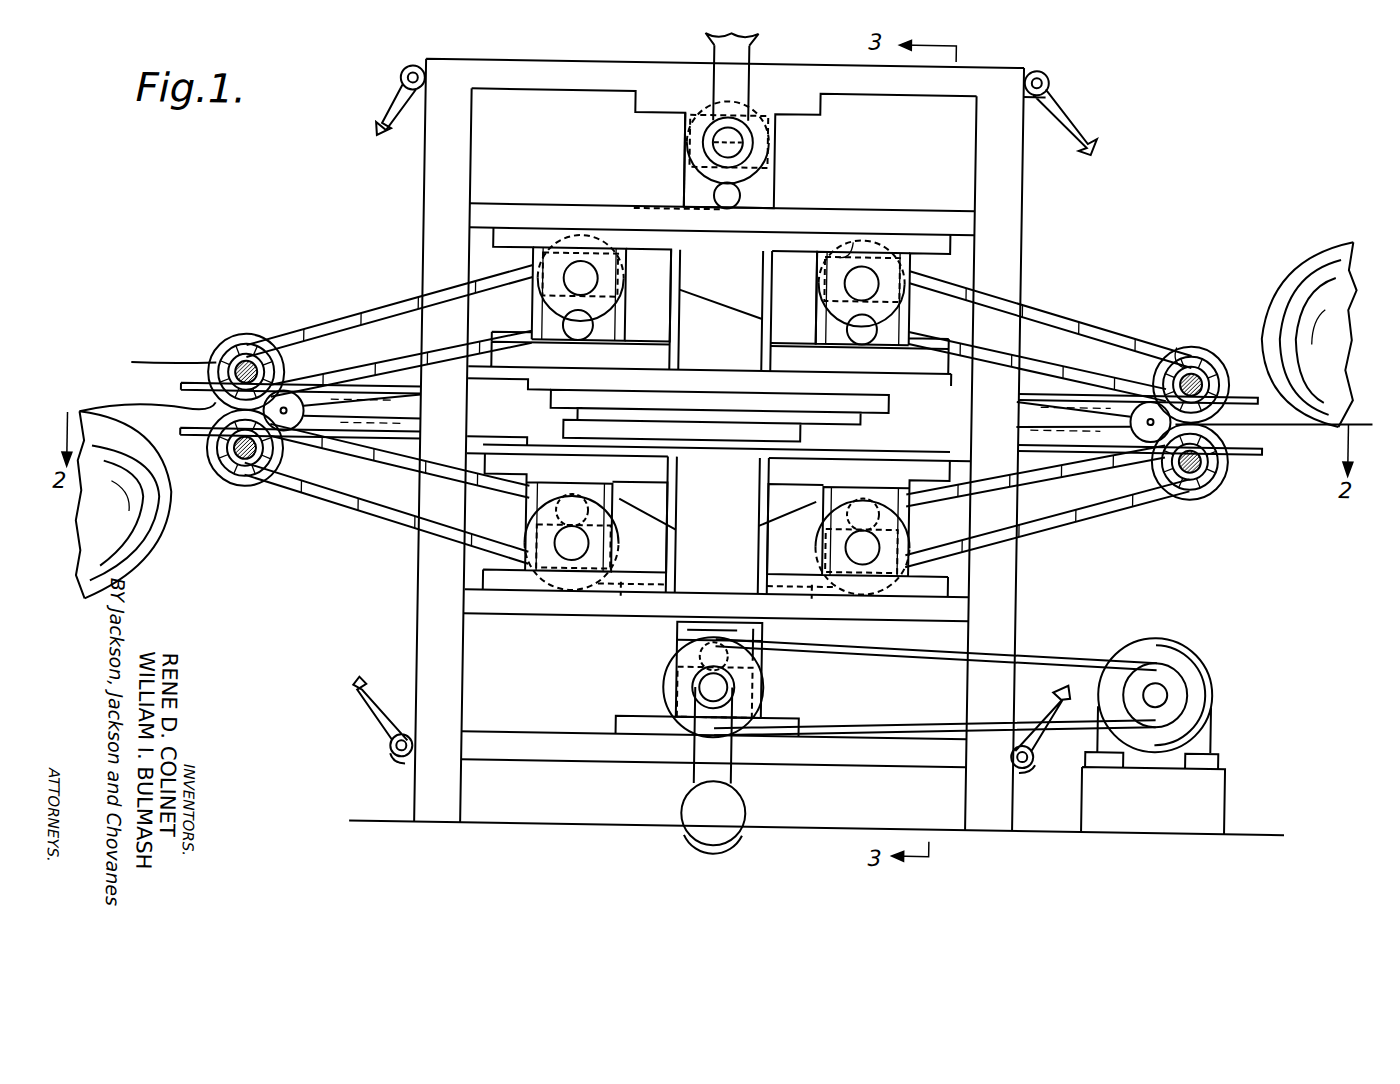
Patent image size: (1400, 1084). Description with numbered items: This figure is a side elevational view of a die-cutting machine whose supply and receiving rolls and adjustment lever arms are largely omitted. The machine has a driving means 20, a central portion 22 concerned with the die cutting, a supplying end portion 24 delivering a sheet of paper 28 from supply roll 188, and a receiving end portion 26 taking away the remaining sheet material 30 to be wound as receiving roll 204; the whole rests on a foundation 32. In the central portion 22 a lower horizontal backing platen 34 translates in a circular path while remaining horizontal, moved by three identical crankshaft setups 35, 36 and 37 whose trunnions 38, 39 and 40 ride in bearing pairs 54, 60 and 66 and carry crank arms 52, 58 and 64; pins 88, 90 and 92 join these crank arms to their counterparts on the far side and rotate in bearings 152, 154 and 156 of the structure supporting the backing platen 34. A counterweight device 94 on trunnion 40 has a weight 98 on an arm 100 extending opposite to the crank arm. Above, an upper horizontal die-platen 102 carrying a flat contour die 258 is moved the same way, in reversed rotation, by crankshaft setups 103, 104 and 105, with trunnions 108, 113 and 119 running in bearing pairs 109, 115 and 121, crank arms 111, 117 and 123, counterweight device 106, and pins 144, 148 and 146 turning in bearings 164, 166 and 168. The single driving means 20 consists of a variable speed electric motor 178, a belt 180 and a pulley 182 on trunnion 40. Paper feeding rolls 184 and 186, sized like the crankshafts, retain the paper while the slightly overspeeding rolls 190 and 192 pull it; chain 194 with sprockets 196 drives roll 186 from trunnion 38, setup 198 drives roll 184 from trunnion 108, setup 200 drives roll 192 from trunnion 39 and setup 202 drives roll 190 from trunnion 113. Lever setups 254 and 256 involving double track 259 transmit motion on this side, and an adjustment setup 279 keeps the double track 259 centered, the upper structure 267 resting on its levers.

The driving means 20 is at (1200, 654).
The central portion 22 is at (968, 70).
The supplying end portion 24 is at (132, 371).
The receiving end portion 26 is at (1196, 342).
The sheet of paper 28 is at (140, 437).
The remaining sheet material 30 is at (1285, 416).
The foundation 32 is at (1022, 823).
The lower horizontal backing platen 34 is at (478, 446).
The crankshaft setup 35 is at (560, 560).
The crankshaft setup 36 is at (870, 565).
The crankshaft setup 37 is at (705, 685).
The trunnion 38 is at (575, 565).
The trunnion 39 is at (862, 565).
The trunnion 40 is at (702, 697).
The crank arm 52 is at (650, 520).
The bearing pair 54 is at (620, 550).
The crank arm 58 is at (915, 500).
The bearing pair 60 is at (955, 560).
The crank arm 64 is at (685, 641).
The bearing pair 66 is at (760, 705).
The pin 88 is at (595, 500).
The pin 90 is at (800, 500).
The pin 92 is at (732, 640).
The counterweight device 94 is at (748, 802).
The weight 98 is at (708, 840).
The arm 100 is at (699, 778).
The upper horizontal die-platen 102 is at (538, 392).
The crankshaft setup 103 is at (578, 262).
The crankshaft setup 104 is at (862, 250).
The crankshaft setup 105 is at (760, 135).
The counterweight device 106 is at (745, 45).
The trunnion 108 is at (560, 250).
The bearing pair 109 is at (622, 308).
The crank arm 111 is at (557, 340).
The trunnion 113 is at (866, 268).
The bearing pair 115 is at (905, 295).
The crank arm 117 is at (822, 347).
The trunnion 119 is at (748, 150).
The bearing pair 121 is at (752, 160).
The crank arm 123 is at (765, 184).
The pin 144 is at (586, 338).
The pin 146 is at (718, 210).
The pin 148 is at (848, 340).
The bearing 152 is at (640, 520).
The bearing 154 is at (787, 530).
The bearing 156 is at (780, 630).
The bearing 164 is at (620, 318).
The bearing 166 is at (790, 313).
The bearing 168 is at (672, 188).
The variable speed electric motor 178 is at (1218, 690).
The belt 180 is at (1065, 655).
The pulley 182 is at (690, 672).
The paper feeding roll 184 is at (255, 343).
The paper feeding roll 186 is at (240, 495).
The supply roll 188 is at (160, 552).
The roll 190 is at (1210, 345).
The roll 192 is at (1208, 490).
The chain 194 is at (342, 523).
The sprockets 196 is at (280, 470).
The chain-and-sprocket setup 198 is at (372, 312).
The chain-and-sprocket setup 200 is at (1128, 510).
The chain-and-sprocket setup 202 is at (1068, 312).
The receiving roll 204 is at (1296, 262).
The lever setup 254 is at (350, 440).
The lever setup 256 is at (1092, 435).
The die 258 is at (718, 400).
The double track 259 is at (196, 452).
The upper structure 267 is at (890, 245).
The adjustment setup 279 is at (372, 722).